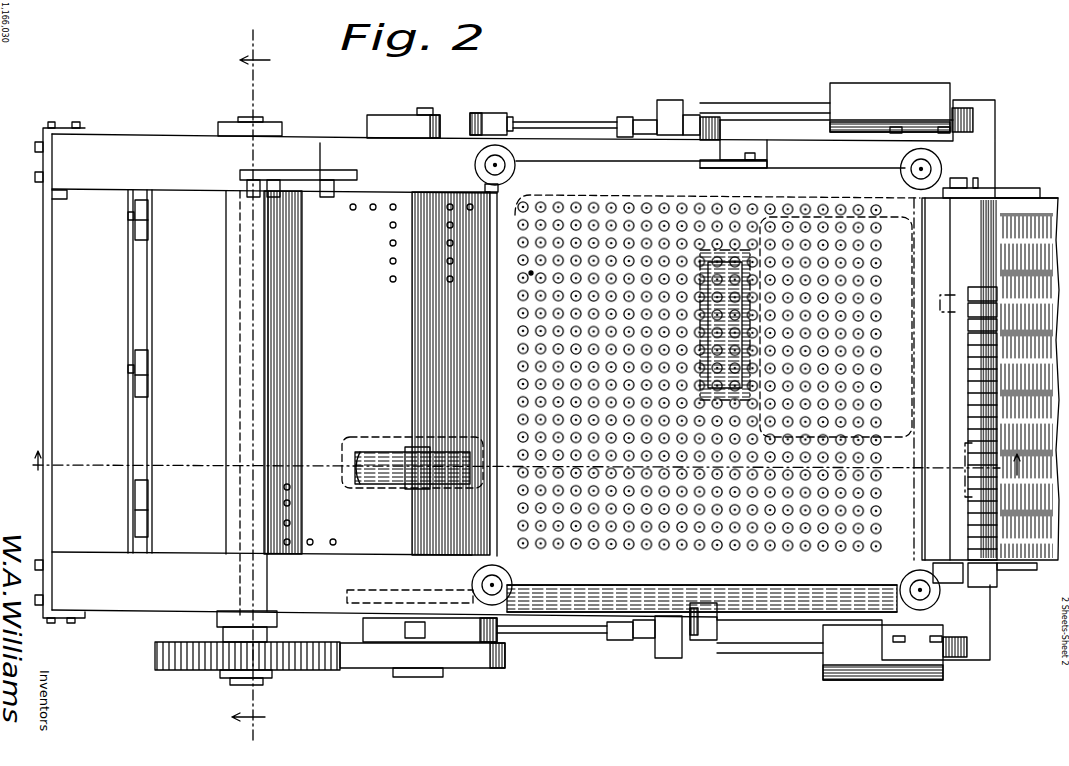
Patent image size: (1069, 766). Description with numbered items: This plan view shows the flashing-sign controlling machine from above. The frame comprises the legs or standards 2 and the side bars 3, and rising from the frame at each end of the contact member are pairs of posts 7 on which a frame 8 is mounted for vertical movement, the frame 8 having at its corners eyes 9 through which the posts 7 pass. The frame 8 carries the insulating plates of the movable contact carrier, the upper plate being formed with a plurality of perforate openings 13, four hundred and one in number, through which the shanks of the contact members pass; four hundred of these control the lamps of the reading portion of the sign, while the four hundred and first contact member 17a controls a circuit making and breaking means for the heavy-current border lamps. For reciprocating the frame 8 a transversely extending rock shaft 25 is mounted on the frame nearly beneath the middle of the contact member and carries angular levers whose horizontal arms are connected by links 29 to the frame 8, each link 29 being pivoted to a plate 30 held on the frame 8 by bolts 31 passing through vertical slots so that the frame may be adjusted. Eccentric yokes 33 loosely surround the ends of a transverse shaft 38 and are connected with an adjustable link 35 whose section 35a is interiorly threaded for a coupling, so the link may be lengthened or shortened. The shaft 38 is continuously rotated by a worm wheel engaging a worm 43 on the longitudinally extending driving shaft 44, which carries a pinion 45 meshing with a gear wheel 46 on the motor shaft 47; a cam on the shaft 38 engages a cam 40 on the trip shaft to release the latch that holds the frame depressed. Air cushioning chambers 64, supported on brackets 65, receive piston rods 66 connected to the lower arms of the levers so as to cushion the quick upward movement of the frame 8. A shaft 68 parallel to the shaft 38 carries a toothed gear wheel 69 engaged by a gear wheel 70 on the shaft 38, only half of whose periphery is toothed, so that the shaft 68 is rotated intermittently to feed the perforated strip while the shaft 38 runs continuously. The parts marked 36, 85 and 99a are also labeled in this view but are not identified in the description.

The legs or standards 2 is at (66, 128).
The side bars 3 is at (453, 145).
The posts 7 is at (508, 162).
The frame 8 is at (573, 178).
The eyes 9 is at (953, 154).
The perforate openings 13 is at (531, 272).
The contact member 17a is at (523, 207).
The transversely extending shaft 25 is at (682, 658).
The links 29 is at (726, 130).
The plate 30 is at (732, 160).
The bolts 31 is at (757, 156).
The eccentric yokes 33 is at (363, 632).
The link 35 is at (565, 634).
The link section 35a is at (642, 622).
The coupling block 36 is at (645, 640).
The transverse shaft 38 is at (430, 378).
The cam 40 is at (876, 338).
The worm 43 is at (437, 450).
The driving shaft 44 is at (515, 478).
The pinion 45 is at (998, 537).
The gear wheel 46 is at (995, 305).
The motor shaft 47 is at (997, 335).
The air cushioning chamber 64 is at (886, 381).
The brackets 65 is at (968, 110).
The piston rod 66 is at (723, 108).
The shaft 68 is at (270, 120).
The gear wheel 69 is at (320, 665).
The gear wheel 70 is at (455, 666).
The side box 85 is at (986, 382).
The roller 99a is at (302, 256).